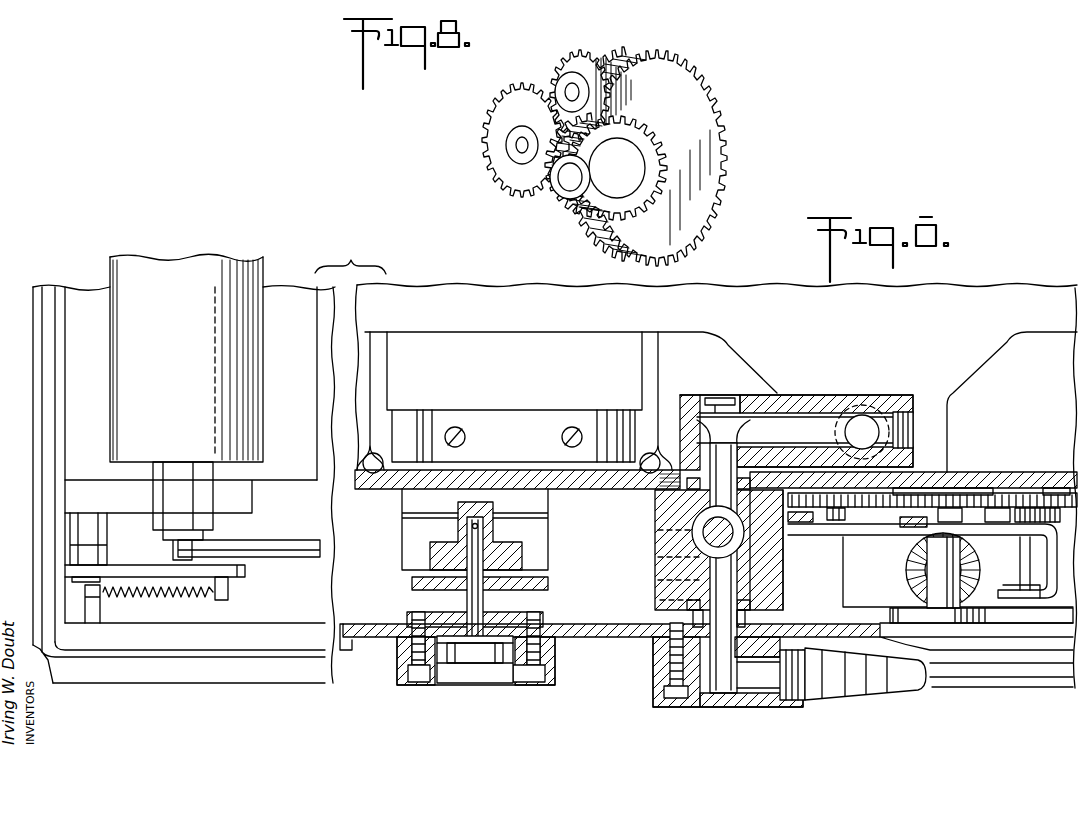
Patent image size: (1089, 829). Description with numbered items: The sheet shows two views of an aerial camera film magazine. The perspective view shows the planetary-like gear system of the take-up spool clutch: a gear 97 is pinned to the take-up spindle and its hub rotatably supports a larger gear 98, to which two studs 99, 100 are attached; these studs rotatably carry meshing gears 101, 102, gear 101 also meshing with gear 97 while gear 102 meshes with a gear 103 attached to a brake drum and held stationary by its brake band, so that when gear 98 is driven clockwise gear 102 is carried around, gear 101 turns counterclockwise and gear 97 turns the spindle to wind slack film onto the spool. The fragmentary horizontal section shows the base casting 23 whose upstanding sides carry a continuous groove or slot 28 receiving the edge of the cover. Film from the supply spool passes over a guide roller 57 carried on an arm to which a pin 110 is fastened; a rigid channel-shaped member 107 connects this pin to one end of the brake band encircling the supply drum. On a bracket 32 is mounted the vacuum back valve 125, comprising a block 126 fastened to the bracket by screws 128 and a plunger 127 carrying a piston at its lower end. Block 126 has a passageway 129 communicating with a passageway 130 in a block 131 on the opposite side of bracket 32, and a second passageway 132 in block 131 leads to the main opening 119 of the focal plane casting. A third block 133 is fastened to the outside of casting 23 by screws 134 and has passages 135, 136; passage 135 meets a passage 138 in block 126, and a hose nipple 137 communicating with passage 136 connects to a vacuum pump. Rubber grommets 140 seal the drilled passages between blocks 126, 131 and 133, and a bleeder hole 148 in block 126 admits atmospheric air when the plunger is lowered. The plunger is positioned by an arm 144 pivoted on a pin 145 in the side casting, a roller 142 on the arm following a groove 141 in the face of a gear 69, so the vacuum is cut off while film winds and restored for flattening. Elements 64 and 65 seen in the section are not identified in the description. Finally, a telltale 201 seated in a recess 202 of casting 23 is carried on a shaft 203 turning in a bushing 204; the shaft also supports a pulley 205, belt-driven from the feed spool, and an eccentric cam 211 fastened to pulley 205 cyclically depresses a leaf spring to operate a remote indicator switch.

In FIG. 8, the gear 98 is at (729, 166).
In FIG. 8, the gear 97 is at (612, 208).
In FIG. 8, the gear 103 is at (578, 204).
In FIG. 8, the gear 102 is at (505, 88).
In FIG. 8, the stud 100 is at (516, 146).
In FIG. 8, the gear 101 is at (593, 55).
In FIG. 8, the stud 99 is at (565, 73).
In FIG. 6, the groove or slot 28 is at (48, 326).
In FIG. 6, the guide roller 57 is at (263, 272).
In FIG. 6, the channel-shaped member 107 is at (279, 545).
In FIG. 6, the pin 110 is at (180, 565).
In FIG. 6, the base casting 23 is at (610, 637).
In FIG. 6, the pulley 205 is at (432, 548).
In FIG. 6, the eccentric cam 211 is at (412, 585).
In FIG. 6, the bushing 204 is at (406, 616).
In FIG. 6, the shaft 203 is at (485, 596).
In FIG. 6, the telltale 201 is at (460, 673).
In FIG. 6, the recess 202 is at (512, 654).
In FIG. 6, the block 131 is at (786, 395).
In FIG. 6, the passageway 132 is at (800, 425).
In FIG. 6, the opening 119 is at (873, 412).
In FIG. 6, the bracket 32 is at (921, 471).
In FIG. 6, the valve 125 is at (699, 537).
In FIG. 6, the block 126 is at (775, 576).
In FIG. 6, the screws 128 is at (705, 545).
In FIG. 6, the passageway 130 is at (692, 492).
In FIG. 6, the passageway 129 is at (700, 507).
In FIG. 6, the hole 148 is at (700, 520).
In FIG. 6, the rubber grommets 140 is at (753, 613).
In FIG. 6, the plunger 127 is at (733, 532).
In FIG. 6, the passage 138 is at (740, 568).
In FIG. 6, the groove 141 is at (842, 500).
In FIG. 6, the pinion 65 is at (905, 530).
In FIG. 6, the pin 145 is at (1020, 556).
In FIG. 6, the gear 64 is at (912, 584).
In FIG. 6, the roller 142 is at (950, 507).
In FIG. 6, the arm 144 is at (1000, 508).
In FIG. 6, the gear 69 is at (1050, 507).
In FIG. 6, the passage 135 is at (712, 690).
In FIG. 6, the screws 134 is at (672, 700).
In FIG. 6, the passage 136 is at (748, 688).
In FIG. 6, the block 133 is at (776, 705).
In FIG. 6, the hose nipple 137 is at (872, 692).